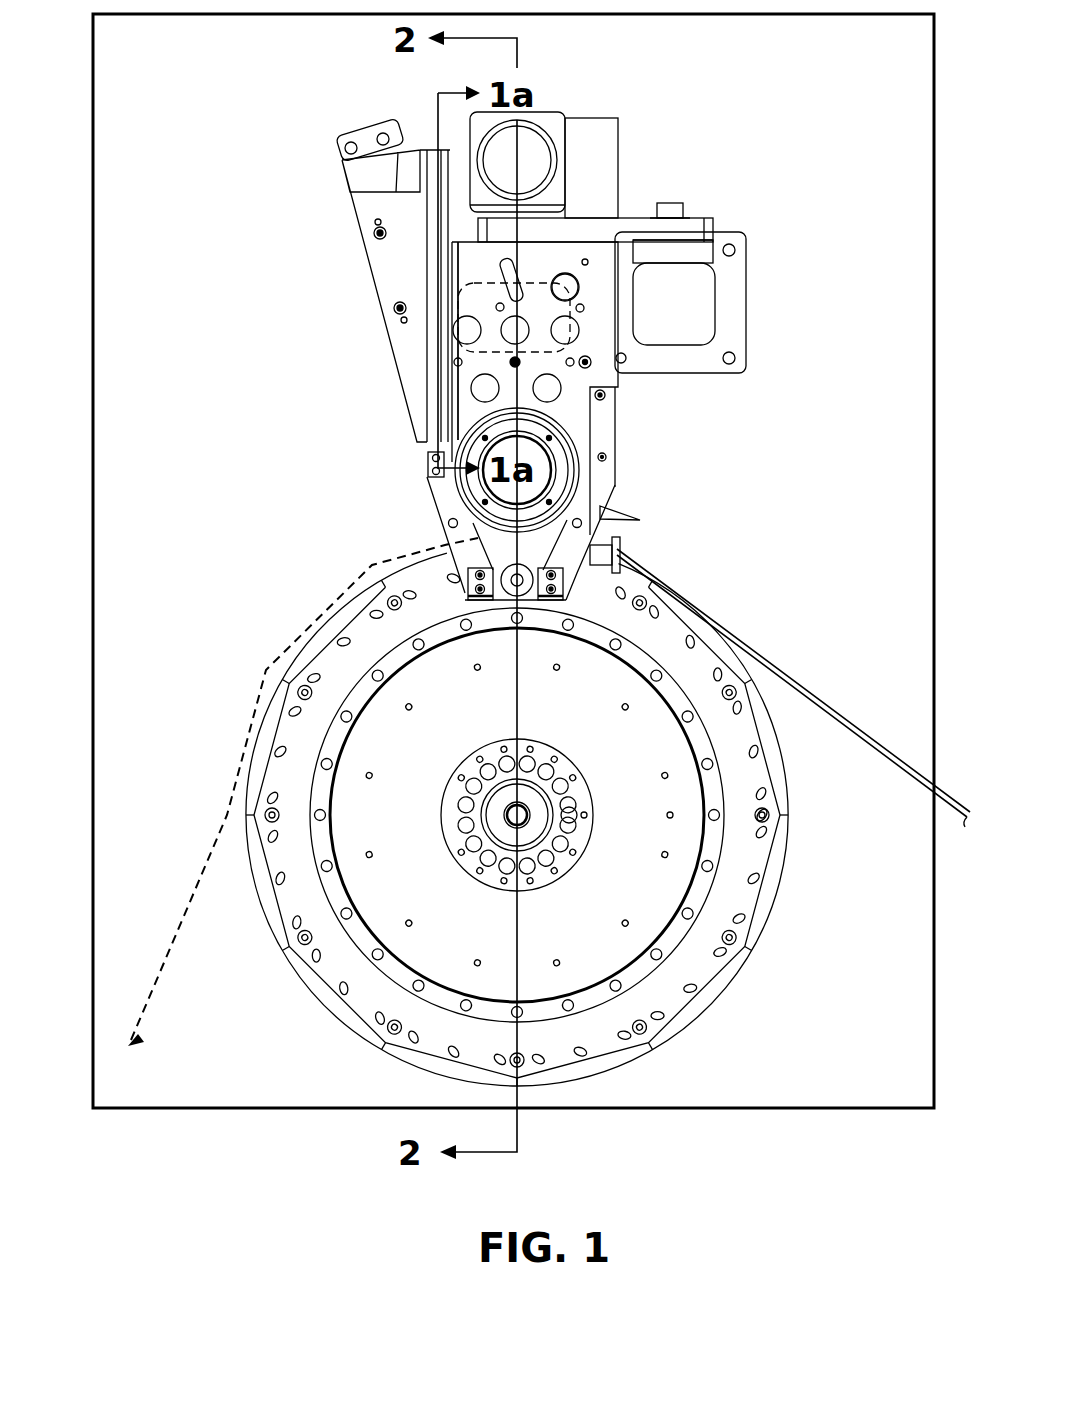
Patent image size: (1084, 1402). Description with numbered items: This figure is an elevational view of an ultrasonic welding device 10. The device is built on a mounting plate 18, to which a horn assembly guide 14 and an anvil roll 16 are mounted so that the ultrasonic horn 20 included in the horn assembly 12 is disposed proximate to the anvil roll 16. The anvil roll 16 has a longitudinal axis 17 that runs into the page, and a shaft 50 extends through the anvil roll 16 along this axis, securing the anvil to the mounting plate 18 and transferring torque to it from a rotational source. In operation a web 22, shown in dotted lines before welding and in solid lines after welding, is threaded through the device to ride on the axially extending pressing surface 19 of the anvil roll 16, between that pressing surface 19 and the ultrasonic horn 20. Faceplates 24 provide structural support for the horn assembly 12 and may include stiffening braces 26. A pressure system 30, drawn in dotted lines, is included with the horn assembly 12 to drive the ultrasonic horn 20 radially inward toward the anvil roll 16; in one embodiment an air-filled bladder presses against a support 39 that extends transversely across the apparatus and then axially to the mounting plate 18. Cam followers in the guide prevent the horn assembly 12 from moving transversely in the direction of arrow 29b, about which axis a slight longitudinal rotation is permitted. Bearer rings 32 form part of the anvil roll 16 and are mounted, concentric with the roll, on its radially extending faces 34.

The ultrasonic welding device 10 is at (228, 1160).
The horn assembly 12 is at (610, 303).
The horn assembly guide 14 is at (374, 182).
The anvil roll 16 is at (800, 742).
The longitudinal axis 17 is at (540, 819).
The mounting plate 18 is at (830, 1112).
The axially extending pressing surface 19 is at (300, 975).
The ultrasonic horn 20 is at (565, 462).
The web 22 is at (188, 905).
The faceplates 24 is at (578, 398).
The stiffening braces 26 is at (420, 573).
The arrow 29b is at (730, 92).
The pressure system 30 is at (568, 283).
The bearer rings 32 is at (312, 853).
The radially extending faces 34 is at (396, 1030).
The support 39 is at (636, 222).
The shaft 50 is at (533, 838).